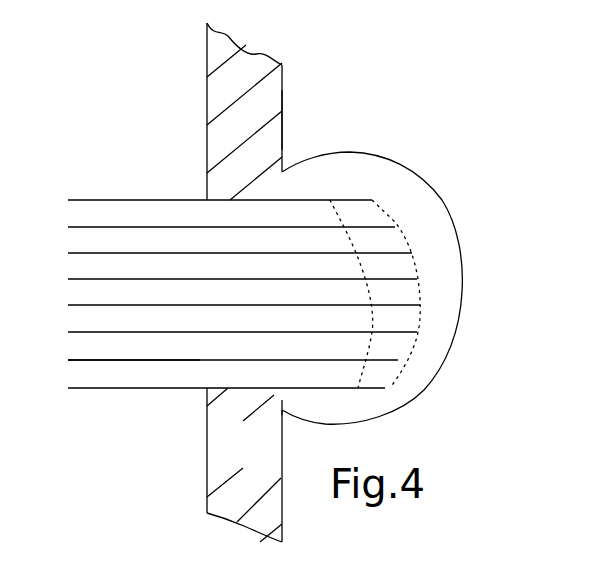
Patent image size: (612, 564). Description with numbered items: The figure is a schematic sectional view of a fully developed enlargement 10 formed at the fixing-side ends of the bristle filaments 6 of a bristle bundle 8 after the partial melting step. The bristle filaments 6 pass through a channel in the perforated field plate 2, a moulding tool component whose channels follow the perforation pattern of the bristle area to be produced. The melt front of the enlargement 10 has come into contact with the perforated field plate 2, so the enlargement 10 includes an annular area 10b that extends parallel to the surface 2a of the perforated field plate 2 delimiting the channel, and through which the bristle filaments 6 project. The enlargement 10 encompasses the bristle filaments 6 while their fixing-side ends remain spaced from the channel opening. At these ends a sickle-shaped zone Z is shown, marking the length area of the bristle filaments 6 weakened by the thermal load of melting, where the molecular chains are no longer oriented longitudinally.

The perforated field plate 2 is at (243, 78).
The surface of the perforated field plate 2a is at (284, 117).
The bristle bundle 8 is at (114, 183).
The bristle filaments 6 is at (130, 345).
The enlargement 10 is at (417, 163).
The annular area 10b is at (280, 388).
The sickle-shaped zone Z is at (383, 247).